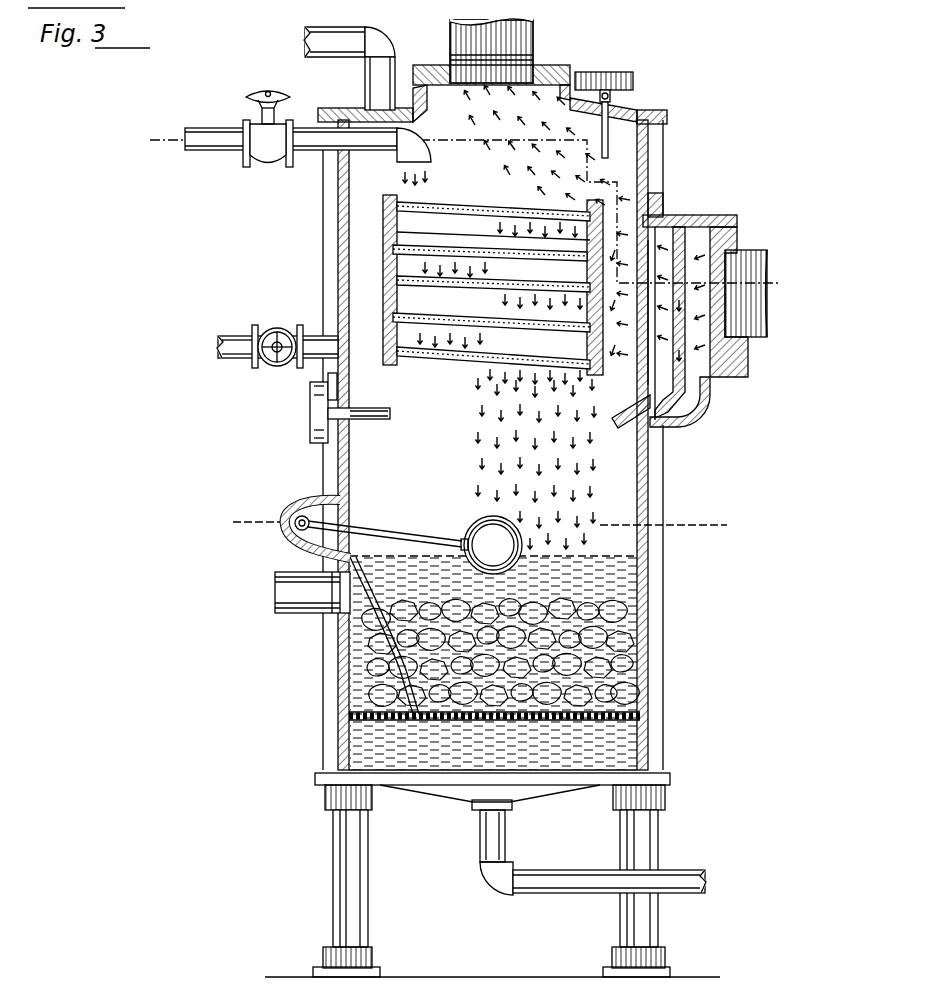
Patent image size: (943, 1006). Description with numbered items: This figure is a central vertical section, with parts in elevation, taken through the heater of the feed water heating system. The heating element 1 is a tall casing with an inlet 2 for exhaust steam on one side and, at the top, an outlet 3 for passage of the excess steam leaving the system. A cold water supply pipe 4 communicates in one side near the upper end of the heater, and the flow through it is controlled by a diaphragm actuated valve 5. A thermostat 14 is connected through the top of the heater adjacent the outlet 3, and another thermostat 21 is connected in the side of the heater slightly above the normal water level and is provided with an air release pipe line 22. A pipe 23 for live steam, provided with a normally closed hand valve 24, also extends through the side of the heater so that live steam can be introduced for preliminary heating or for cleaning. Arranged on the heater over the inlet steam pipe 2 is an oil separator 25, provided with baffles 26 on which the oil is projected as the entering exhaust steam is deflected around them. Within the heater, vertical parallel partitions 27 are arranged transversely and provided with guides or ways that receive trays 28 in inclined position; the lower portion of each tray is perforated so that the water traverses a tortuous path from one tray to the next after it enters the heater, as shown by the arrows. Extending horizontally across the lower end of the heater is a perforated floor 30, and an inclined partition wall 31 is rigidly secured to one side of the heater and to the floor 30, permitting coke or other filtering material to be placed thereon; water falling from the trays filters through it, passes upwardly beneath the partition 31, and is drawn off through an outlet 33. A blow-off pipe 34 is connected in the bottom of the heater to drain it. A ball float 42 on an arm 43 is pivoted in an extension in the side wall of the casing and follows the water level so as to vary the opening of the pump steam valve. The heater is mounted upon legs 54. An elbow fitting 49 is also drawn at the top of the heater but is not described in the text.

The heating element 1 is at (350, 722).
The inlet 2 is at (753, 338).
The outlet 3 is at (494, 66).
The cold water supply pipe 4 is at (219, 152).
The diaphragm actuated valve 5 is at (283, 155).
The thermostat 14 is at (605, 80).
The thermostat 21 is at (314, 428).
The air release pipe line 22 is at (332, 372).
The pipe for live steam 23 is at (245, 360).
The hand valve 24 is at (284, 330).
The oil separator 25 is at (698, 420).
The baffles 26 is at (678, 273).
The vertical parallel partitions 27 is at (590, 257).
The trays 28 is at (437, 253).
The perforated floor 30 is at (448, 718).
The inclined partition wall 31 is at (385, 612).
The outlet 33 is at (304, 607).
The blow-off pipe 34 is at (557, 878).
The ball float 42 is at (491, 545).
The arm 43 is at (403, 536).
The supply pipe elbow 49 is at (341, 42).
The legs 54 is at (630, 912).